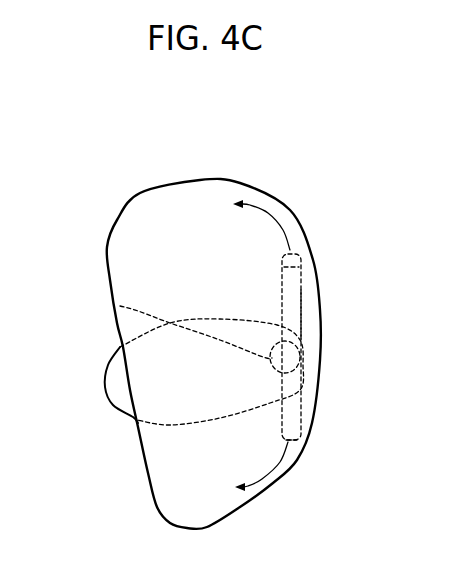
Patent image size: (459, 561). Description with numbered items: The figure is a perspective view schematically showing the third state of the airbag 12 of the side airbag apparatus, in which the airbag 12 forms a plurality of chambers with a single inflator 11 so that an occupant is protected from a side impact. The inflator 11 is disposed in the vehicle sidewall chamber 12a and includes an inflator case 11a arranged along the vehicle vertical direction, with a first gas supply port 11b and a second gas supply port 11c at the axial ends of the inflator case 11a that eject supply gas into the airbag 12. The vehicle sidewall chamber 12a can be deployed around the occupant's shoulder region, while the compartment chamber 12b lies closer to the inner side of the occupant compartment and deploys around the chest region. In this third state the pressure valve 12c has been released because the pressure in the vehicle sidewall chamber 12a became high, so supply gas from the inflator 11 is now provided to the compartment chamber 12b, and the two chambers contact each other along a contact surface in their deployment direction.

The airbag 12 is at (195, 175).
The vehicle sidewall chamber 12a is at (153, 233).
The compartment chamber 12b is at (107, 364).
The pressure valve 12c is at (120, 306).
The inflator 11 is at (307, 288).
The inflator case 11a is at (304, 316).
The first gas supply port 11b is at (302, 254).
The second gas supply port 11c is at (305, 443).